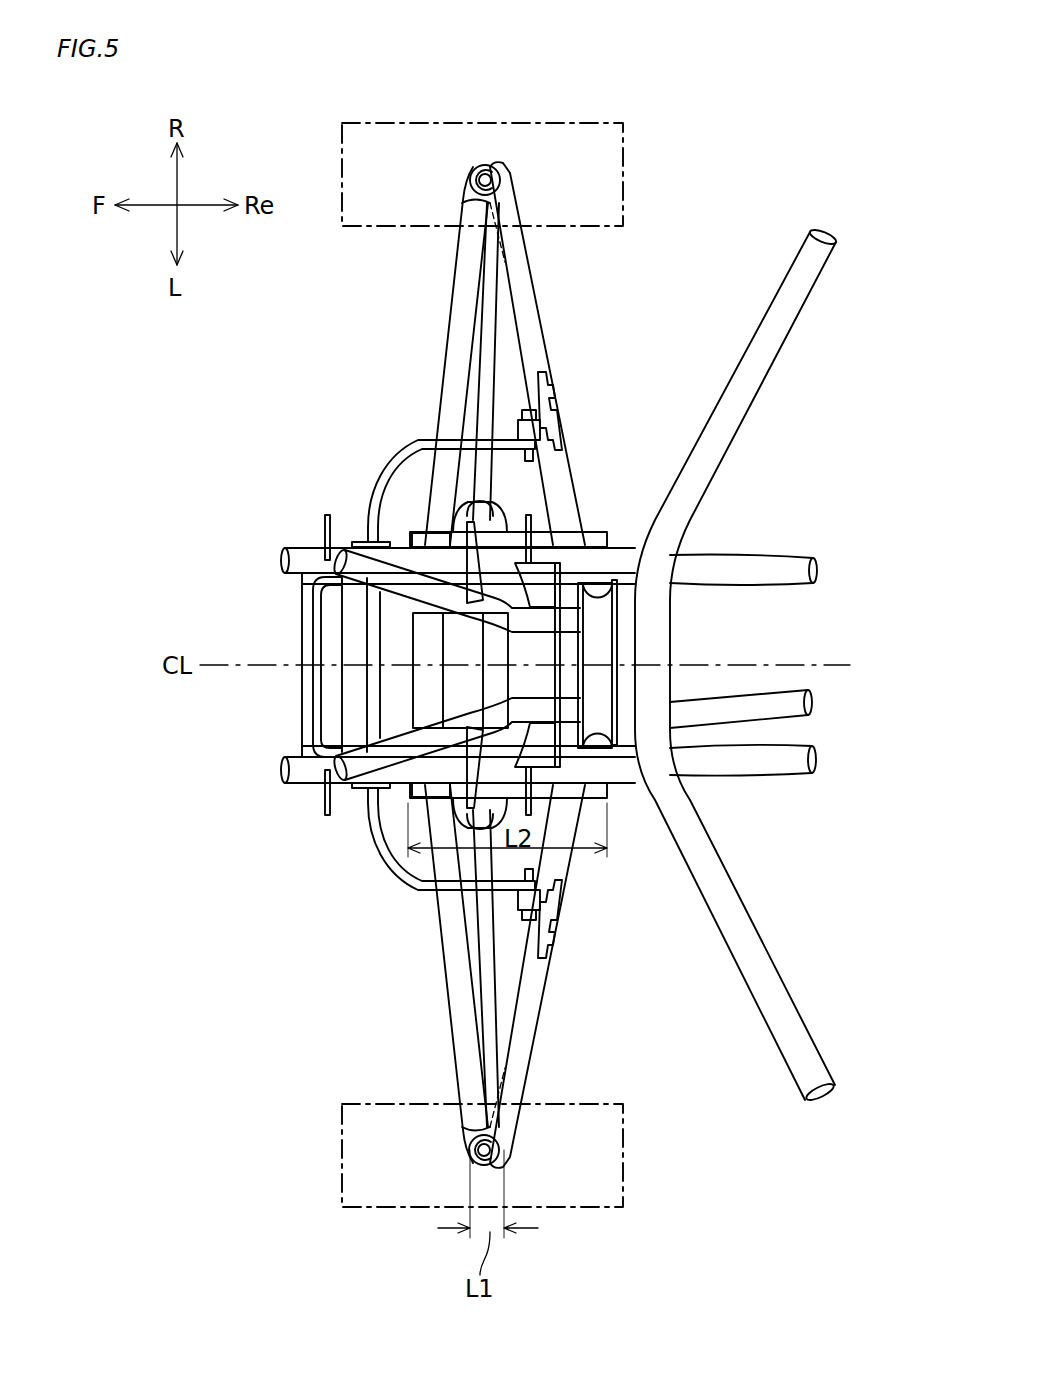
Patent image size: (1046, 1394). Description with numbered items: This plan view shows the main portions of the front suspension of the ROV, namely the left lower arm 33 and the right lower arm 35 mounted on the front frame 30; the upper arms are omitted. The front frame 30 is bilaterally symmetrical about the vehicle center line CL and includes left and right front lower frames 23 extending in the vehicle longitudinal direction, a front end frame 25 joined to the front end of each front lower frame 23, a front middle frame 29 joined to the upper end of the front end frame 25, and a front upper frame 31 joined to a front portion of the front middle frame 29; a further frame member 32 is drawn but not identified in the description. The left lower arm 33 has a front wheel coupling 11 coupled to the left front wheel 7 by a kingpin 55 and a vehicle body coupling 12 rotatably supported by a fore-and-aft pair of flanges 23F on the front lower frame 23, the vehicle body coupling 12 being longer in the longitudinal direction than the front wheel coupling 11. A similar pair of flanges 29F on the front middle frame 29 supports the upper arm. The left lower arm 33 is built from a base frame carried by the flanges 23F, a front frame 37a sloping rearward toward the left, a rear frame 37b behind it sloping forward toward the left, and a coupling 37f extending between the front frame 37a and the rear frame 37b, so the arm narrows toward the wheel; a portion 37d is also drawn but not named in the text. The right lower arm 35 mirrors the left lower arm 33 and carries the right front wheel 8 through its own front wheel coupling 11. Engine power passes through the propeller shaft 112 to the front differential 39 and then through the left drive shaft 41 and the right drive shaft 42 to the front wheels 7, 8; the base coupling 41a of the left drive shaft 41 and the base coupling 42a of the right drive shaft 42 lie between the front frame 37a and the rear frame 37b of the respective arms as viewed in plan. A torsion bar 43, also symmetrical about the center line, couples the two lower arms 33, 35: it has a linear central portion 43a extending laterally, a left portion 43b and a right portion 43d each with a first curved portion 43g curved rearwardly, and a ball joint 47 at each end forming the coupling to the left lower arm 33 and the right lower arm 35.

The left front wheel 7 is at (342, 1124).
The right front wheel 8 is at (342, 143).
The front wheel coupling 11 is at (490, 165).
The vehicle body coupling 12 is at (430, 540).
The front lower frame 23 is at (758, 565).
The flanges 23F is at (362, 543).
The front end frame 25 is at (282, 563).
The front middle frame 29 is at (582, 560).
The flanges 29F is at (326, 540).
The front frame 30 is at (275, 556).
The front upper frame 31 is at (365, 572).
The cross member 32 is at (778, 338).
The left lower arm 33 is at (444, 1002).
The right lower arm 35 is at (444, 328).
The front frame 37a is at (472, 238).
The rear frame 37b is at (513, 237).
The stepped bracket 37d is at (546, 380).
The coupling 37f is at (470, 935).
The front differential 39 is at (425, 700).
The left drive shaft 41 is at (497, 1013).
The base coupling 41a is at (380, 875).
The right drive shaft 42 is at (493, 317).
The base coupling 42a is at (472, 508).
The torsion bar 43 is at (360, 682).
The central portion 43a is at (362, 643).
The left portion 43b is at (540, 880).
The right portion 43d is at (540, 448).
The first curved portion 43g is at (372, 500).
The ball joint 47 is at (520, 430).
The kingpin 55 is at (480, 165).
The propeller shaft 112 is at (762, 702).